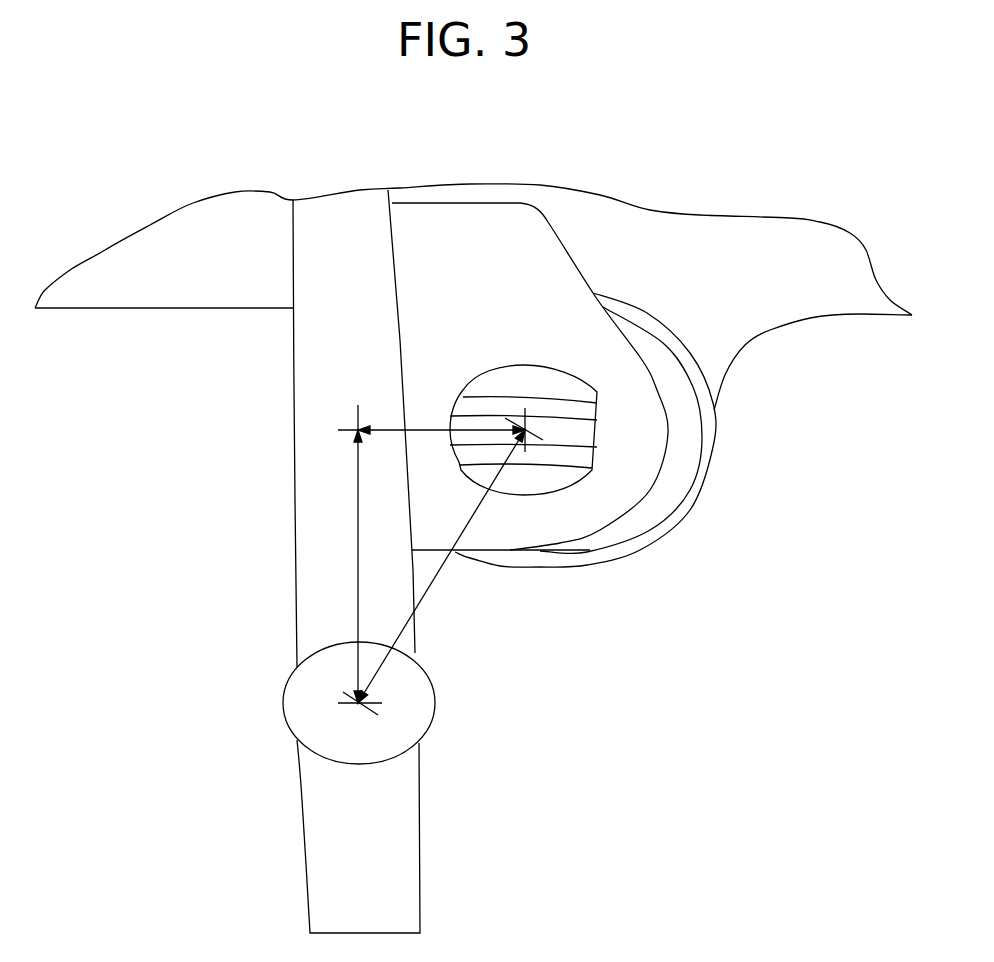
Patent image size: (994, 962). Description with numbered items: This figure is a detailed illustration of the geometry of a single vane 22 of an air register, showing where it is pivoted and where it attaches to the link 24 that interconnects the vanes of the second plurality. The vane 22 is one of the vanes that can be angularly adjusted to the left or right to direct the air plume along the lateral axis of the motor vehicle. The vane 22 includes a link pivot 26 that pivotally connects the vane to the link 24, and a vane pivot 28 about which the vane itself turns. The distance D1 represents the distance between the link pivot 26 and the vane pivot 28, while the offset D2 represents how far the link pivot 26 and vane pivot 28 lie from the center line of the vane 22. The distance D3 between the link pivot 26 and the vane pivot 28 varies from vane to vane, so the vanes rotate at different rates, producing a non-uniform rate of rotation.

The vane 22 is at (392, 858).
The link 24 is at (208, 227).
The link pivot 26 is at (560, 475).
The vane pivot 28 is at (315, 705).
The distance between link pivot and vane pivot D1 is at (358, 562).
The offset from vane center line D2 is at (423, 428).
The distance between link pivot and vane pivot D3 is at (435, 580).